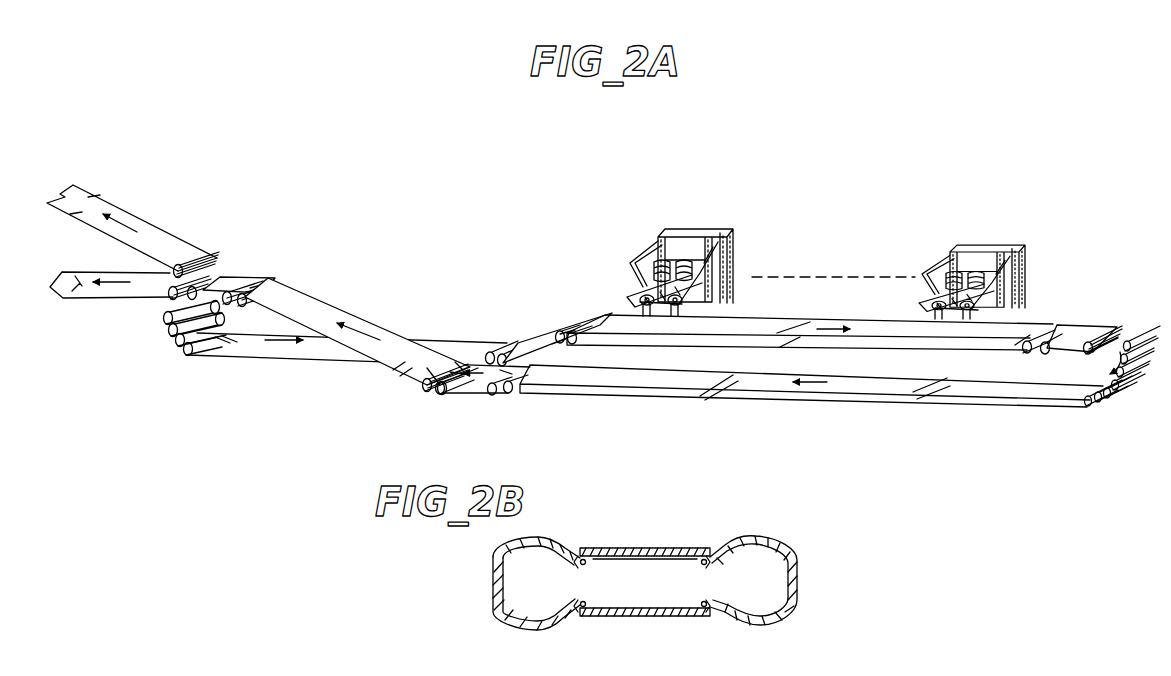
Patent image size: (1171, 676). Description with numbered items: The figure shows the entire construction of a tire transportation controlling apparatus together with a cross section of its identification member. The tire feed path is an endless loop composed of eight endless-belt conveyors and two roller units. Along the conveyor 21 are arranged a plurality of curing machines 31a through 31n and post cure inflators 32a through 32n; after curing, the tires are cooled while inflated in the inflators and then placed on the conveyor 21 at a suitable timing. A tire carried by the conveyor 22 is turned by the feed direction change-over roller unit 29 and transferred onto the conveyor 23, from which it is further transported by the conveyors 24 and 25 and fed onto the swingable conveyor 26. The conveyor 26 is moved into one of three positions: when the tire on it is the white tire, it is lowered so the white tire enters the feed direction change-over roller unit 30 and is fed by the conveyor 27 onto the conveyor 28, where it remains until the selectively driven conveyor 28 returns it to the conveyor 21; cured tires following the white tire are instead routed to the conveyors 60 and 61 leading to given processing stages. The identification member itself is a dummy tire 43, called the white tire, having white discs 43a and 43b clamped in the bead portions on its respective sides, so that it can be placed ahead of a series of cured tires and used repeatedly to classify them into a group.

In FIG. 2A, the conveyor 21 is at (762, 320).
In FIG. 2A, the conveyor 22 is at (1083, 326).
In FIG. 2A, the conveyor 23 is at (817, 402).
In FIG. 2A, the conveyor 24 is at (473, 397).
In FIG. 2A, the conveyor 25 is at (328, 302).
In FIG. 2A, the conveyor 26 is at (247, 279).
In FIG. 2A, the conveyor 27 is at (273, 357).
In FIG. 2A, the conveyor 28 is at (545, 337).
In FIG. 2A, the feed direction change-over roller unit 29 is at (1118, 402).
In FIG. 2A, the feed direction change-over roller unit 30 is at (165, 340).
In FIG. 2A, the curing machine 31n is at (700, 233).
In FIG. 2A, the curing machine 31a is at (978, 242).
In FIG. 2A, the post cure inflator 32n is at (637, 297).
In FIG. 2A, the post cure inflator 32a is at (993, 310).
In FIG. 2A, the conveyor 60 is at (150, 222).
In FIG. 2A, the conveyor 61 is at (98, 302).
In FIG. 2B, the dummy tire 43 is at (802, 567).
In FIG. 2B, the white disc 43a is at (660, 548).
In FIG. 2B, the white disc 43b is at (657, 616).